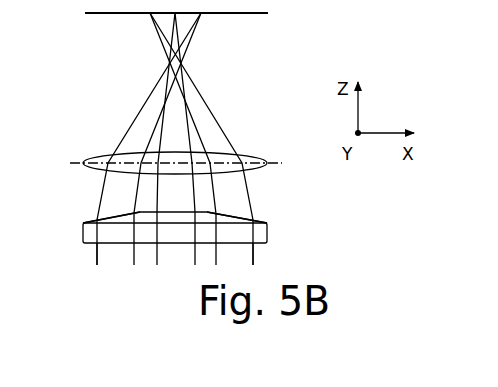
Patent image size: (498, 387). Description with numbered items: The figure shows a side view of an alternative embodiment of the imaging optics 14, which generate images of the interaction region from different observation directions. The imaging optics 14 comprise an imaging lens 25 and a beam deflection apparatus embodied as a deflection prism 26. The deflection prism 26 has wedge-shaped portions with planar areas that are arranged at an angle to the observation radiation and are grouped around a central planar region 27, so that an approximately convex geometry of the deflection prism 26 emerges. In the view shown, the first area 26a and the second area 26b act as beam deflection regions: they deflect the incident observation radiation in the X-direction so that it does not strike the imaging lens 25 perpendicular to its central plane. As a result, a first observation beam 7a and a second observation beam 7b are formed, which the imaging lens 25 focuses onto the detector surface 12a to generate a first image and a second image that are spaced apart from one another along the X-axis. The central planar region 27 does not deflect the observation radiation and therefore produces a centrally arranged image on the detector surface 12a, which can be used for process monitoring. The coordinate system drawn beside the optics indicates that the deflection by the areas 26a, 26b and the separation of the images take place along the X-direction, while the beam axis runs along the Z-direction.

The detector surface 12a is at (105, 25).
The first observation beam 7a is at (143, 115).
The second observation beam 7b is at (207, 122).
The imaging lens 25 is at (104, 158).
The deflection prism 26 is at (274, 213).
The first area 26a is at (108, 218).
The second area 26b is at (238, 217).
The imaging optics 14 is at (274, 256).
The central planar region 27 is at (178, 231).